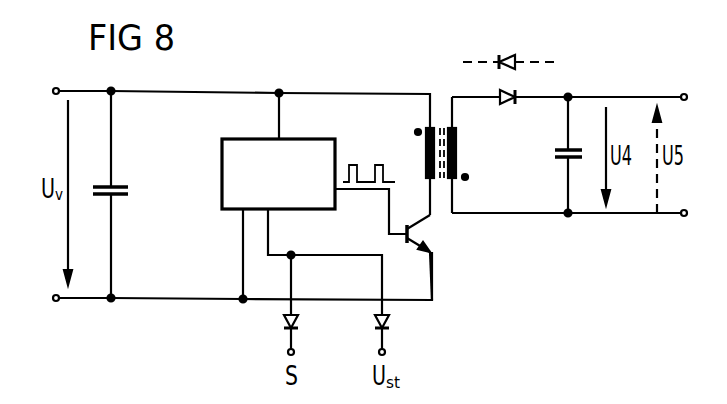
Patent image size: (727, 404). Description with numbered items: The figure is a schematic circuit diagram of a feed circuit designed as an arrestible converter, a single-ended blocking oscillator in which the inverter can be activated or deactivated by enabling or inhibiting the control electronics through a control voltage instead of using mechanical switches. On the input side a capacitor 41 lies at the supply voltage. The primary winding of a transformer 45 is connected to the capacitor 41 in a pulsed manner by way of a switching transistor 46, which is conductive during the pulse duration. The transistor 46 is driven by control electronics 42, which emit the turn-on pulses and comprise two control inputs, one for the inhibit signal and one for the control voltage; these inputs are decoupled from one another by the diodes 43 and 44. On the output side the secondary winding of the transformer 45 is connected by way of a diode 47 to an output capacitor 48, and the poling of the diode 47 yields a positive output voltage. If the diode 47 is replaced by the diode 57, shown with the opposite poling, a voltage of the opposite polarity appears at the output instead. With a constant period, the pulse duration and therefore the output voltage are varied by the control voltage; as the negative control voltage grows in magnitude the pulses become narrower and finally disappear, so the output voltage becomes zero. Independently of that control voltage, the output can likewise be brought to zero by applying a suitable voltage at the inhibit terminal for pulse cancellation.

The capacitor 41 is at (124, 194).
The control electronics 42 is at (278, 151).
The diode 43 is at (276, 333).
The diode 44 is at (395, 333).
The transformer 45 is at (450, 155).
The switching transistor 46 is at (432, 239).
The diode 47 is at (509, 113).
The output capacitor 48 is at (554, 155).
The diode 57 is at (510, 45).